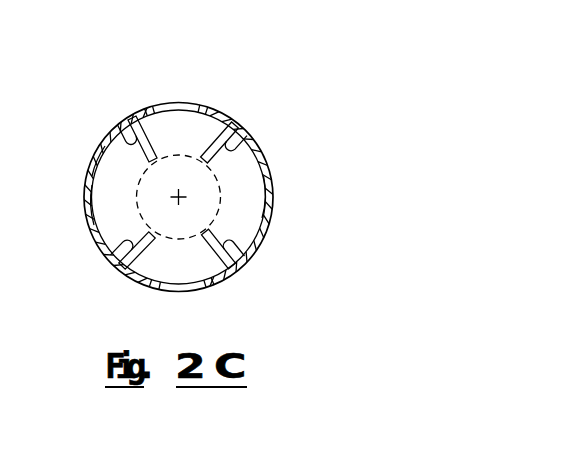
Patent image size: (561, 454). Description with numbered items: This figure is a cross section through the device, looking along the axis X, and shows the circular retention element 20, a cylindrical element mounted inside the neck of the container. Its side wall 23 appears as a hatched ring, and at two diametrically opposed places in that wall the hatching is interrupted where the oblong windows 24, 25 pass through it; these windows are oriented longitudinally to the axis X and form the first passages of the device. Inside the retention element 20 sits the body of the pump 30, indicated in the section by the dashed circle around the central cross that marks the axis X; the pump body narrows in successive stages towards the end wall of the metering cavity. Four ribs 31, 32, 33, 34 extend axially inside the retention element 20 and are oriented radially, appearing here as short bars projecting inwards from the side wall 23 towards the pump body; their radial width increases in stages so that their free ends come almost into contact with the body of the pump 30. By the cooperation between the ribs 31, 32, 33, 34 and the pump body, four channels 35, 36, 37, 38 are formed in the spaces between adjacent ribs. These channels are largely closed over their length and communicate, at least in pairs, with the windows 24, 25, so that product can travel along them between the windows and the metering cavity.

The retention element 20 is at (259, 131).
The side wall 23 is at (250, 243).
The window 24 is at (195, 108).
The window 25 is at (152, 290).
The pump 30 is at (123, 181).
The rib 31 is at (124, 140).
The rib 32 is at (237, 124).
The rib 33 is at (108, 257).
The rib 34 is at (228, 252).
The channel 35 is at (168, 134).
The channel 36 is at (239, 185).
The channel 37 is at (185, 259).
The channel 38 is at (114, 212).
The axis X is at (180, 199).